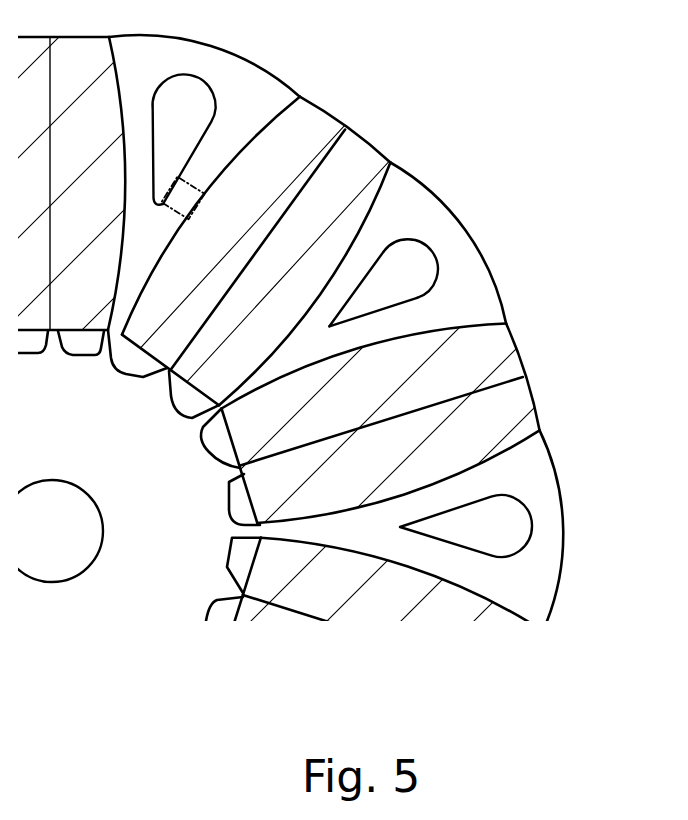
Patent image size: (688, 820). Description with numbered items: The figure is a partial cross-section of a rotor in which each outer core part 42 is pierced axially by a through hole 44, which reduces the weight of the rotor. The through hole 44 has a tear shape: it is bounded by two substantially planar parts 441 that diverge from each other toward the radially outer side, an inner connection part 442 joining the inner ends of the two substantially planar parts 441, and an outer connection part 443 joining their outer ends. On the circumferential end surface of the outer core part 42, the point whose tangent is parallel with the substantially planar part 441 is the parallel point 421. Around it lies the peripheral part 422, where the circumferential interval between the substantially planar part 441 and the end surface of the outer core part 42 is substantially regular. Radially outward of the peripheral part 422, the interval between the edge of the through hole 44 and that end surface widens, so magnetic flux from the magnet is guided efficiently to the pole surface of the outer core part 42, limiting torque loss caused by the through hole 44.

The outer core part 42 is at (540, 550).
The parallel point 421 is at (206, 208).
The peripheral part 422 is at (178, 176).
The through hole 44 is at (470, 274).
The substantially planar part 441 is at (395, 313).
The inner connection part 442 is at (332, 330).
The outer connection part 443 is at (437, 262).